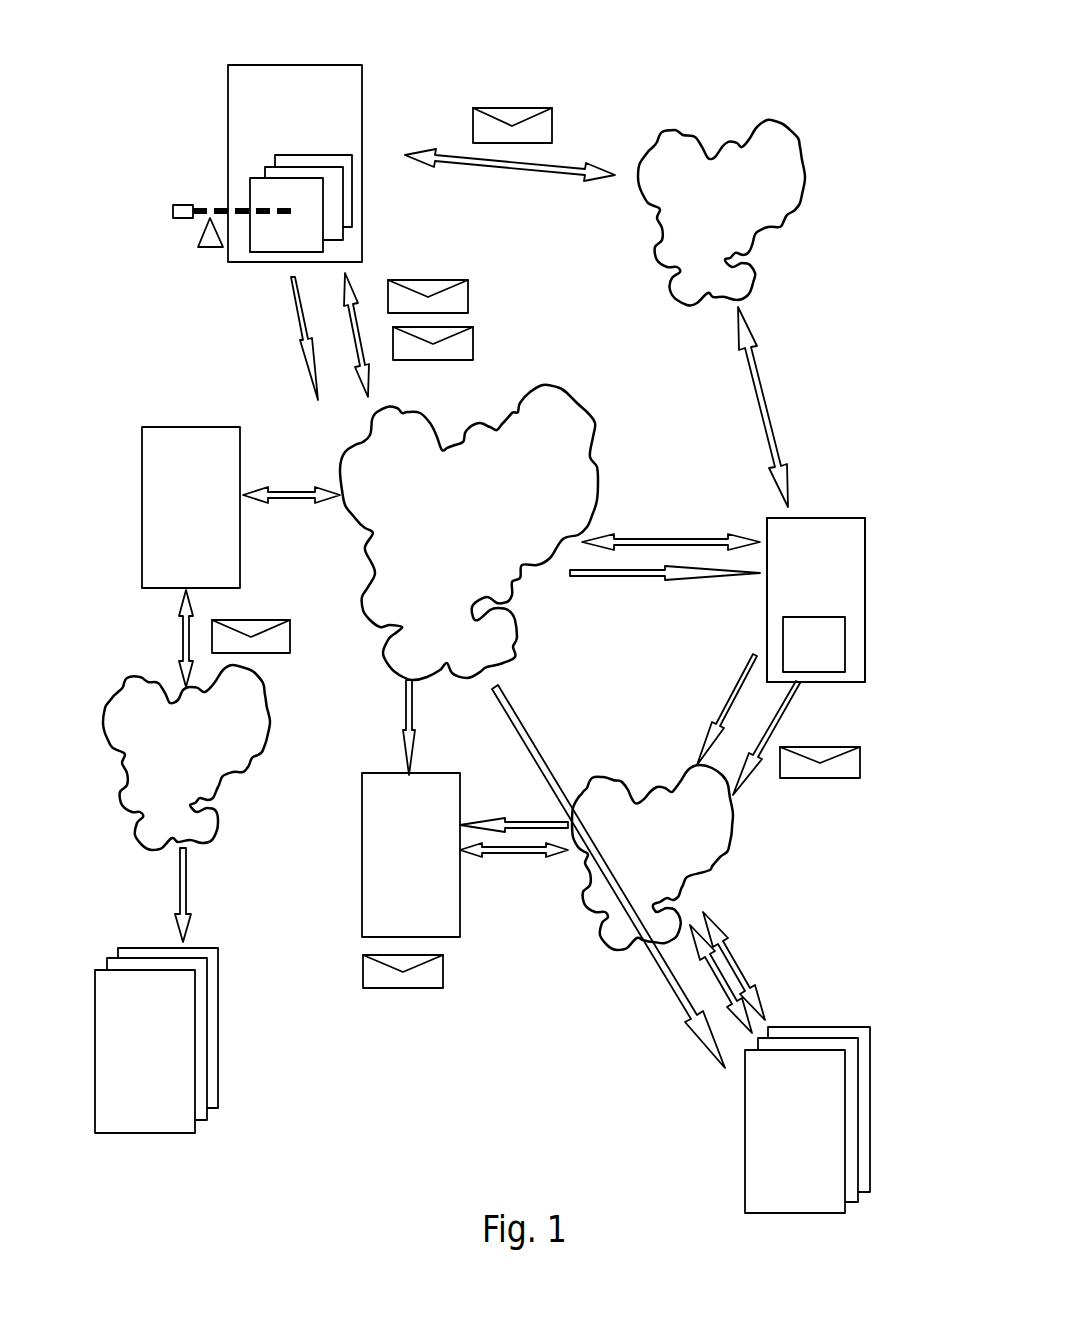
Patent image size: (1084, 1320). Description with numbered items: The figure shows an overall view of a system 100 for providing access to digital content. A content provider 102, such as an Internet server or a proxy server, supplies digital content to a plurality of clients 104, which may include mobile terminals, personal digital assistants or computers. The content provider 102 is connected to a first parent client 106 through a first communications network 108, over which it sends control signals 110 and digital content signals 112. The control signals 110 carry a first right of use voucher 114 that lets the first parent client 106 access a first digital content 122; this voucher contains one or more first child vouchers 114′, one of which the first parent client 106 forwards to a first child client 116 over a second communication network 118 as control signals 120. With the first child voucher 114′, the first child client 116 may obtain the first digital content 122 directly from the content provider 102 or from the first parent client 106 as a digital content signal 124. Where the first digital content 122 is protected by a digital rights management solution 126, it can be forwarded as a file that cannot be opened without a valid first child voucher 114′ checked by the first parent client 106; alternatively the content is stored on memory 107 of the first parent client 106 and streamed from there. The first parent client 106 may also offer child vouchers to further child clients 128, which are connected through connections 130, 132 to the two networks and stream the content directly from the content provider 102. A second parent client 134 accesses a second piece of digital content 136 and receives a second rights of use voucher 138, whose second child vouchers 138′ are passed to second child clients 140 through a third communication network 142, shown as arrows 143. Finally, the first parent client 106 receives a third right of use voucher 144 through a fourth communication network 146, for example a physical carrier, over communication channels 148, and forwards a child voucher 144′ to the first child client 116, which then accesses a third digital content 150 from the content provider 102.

The system 100 is at (625, 80).
The content provider 102 is at (298, 72).
The plurality of clients 104 is at (822, 420).
The first parent client 106 is at (817, 524).
The memory 107 is at (840, 645).
The first communications network 108 is at (575, 412).
The control signals 110 is at (370, 394).
The digital content signals 112 is at (298, 334).
The first right of use voucher 114 is at (470, 343).
The first child voucher 114′ is at (850, 768).
The first child client 116 is at (361, 836).
The second communication network 118 is at (728, 825).
The control signals 120 is at (522, 858).
The first digital content 122 is at (320, 180).
The digital content signal 124 is at (490, 822).
The digital rights management solution 126 is at (172, 210).
The child clients 128 is at (832, 1045).
The connection 130 is at (740, 990).
The connection 132 is at (540, 760).
The second parent client 134 is at (190, 430).
The second piece of digital content 136 is at (342, 228).
The second rights of use voucher 138 is at (462, 290).
The second child vouchers 138′ is at (292, 640).
The second child clients 140 is at (200, 1015).
The third communication network 142 is at (250, 757).
The arrows 143 is at (182, 642).
The third right of use voucher 144 is at (515, 116).
The child voucher 144′ is at (425, 986).
The fourth communication network 146 is at (800, 140).
The communication channels 148 is at (582, 165).
The third digital content 150 is at (350, 186).